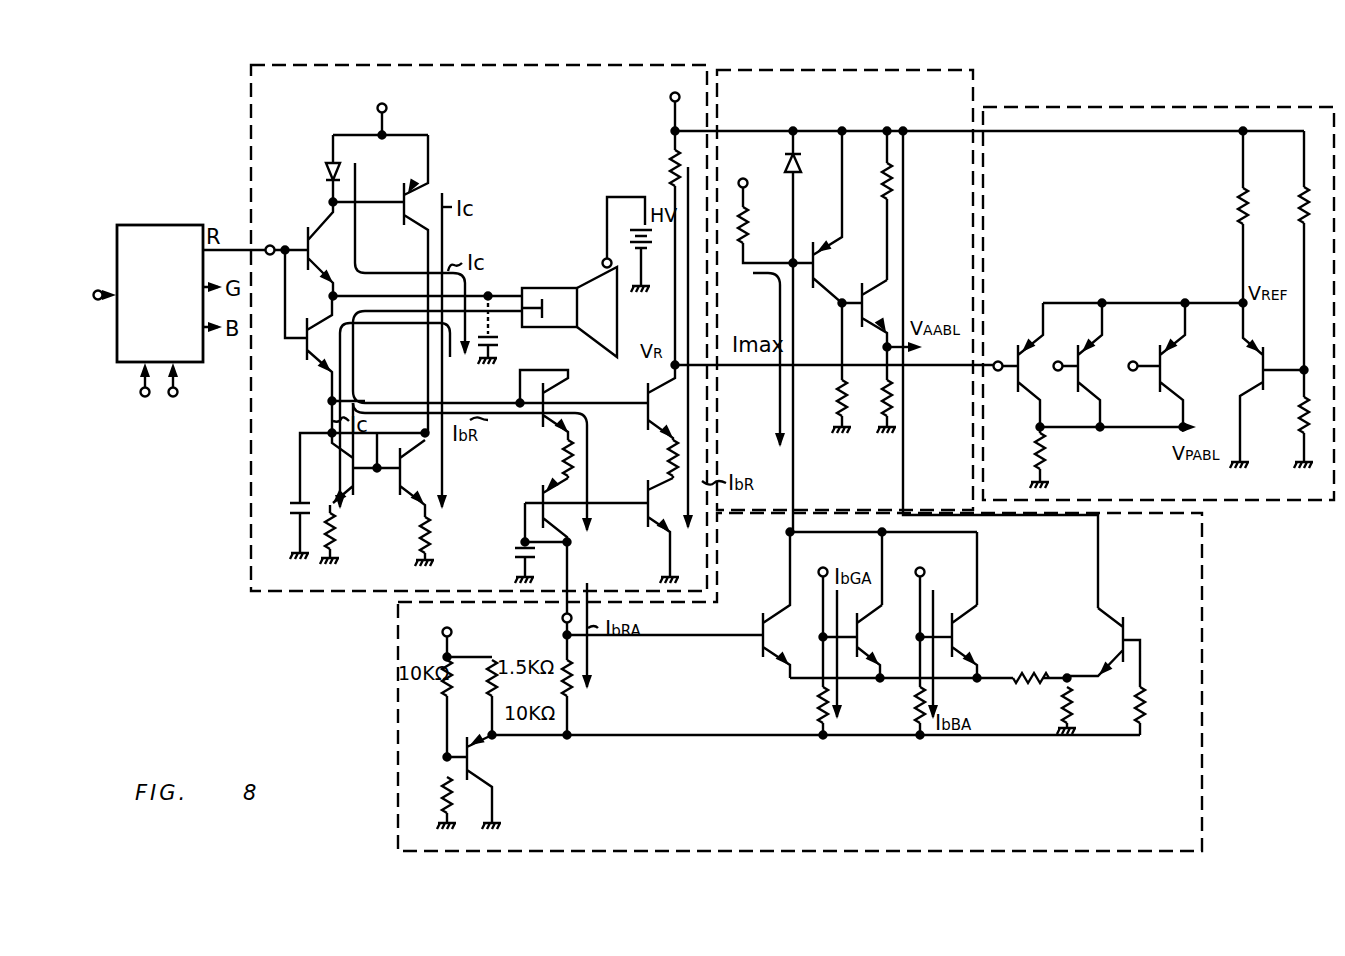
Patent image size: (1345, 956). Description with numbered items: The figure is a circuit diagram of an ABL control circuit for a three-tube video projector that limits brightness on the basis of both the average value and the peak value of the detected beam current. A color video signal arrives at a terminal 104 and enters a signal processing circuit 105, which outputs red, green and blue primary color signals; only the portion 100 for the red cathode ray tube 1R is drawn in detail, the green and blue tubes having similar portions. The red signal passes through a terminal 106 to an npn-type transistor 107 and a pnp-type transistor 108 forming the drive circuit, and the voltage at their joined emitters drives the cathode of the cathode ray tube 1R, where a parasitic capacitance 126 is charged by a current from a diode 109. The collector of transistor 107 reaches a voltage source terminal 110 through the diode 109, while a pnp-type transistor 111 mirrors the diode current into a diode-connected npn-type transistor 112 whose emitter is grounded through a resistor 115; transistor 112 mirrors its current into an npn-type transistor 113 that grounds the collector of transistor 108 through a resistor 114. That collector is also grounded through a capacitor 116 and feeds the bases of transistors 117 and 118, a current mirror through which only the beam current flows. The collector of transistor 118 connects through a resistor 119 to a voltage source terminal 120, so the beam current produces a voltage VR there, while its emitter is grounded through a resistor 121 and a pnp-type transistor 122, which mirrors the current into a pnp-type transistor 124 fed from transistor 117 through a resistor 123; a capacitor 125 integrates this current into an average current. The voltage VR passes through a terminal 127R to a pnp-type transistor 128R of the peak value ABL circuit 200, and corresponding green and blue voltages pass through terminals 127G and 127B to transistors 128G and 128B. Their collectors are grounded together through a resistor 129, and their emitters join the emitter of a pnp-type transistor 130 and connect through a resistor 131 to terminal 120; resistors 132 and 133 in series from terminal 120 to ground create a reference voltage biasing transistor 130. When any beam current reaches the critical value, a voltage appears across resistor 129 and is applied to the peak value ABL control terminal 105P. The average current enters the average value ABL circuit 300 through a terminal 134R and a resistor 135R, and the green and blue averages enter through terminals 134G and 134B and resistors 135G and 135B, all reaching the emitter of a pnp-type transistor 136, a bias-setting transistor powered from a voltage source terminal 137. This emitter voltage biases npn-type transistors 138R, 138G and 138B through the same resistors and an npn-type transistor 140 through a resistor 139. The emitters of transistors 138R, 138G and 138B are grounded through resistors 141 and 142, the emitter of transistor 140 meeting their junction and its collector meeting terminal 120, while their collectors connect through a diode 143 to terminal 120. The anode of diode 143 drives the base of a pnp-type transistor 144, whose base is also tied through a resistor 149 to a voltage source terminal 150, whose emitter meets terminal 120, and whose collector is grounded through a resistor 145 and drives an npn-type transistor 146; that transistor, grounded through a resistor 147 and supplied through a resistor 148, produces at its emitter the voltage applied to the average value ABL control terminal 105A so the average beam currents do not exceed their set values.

The portion of the cathode ray tube circuit 100 is at (320, 593).
The peak value ABL circuit 200 is at (1268, 501).
The average value ABL circuit 300 is at (1202, 806).
The terminal 104 is at (98, 300).
The signal processing circuit 105 is at (160, 222).
The peak value ABL control terminal 105P is at (145, 397).
The average value ABL control terminal 105A is at (175, 397).
The terminal 106 is at (282, 246).
The npn-type transistor 107 is at (305, 228).
The pnp-type transistor 108 is at (303, 360).
The diode 109 is at (325, 170).
The voltage source terminal 110 is at (388, 108).
The pnp-type transistor 111 is at (398, 226).
The npn-type transistor 112 is at (397, 496).
The npn-type transistor 113 is at (357, 495).
The resistor 114 is at (336, 540).
The resistor 115 is at (439, 546).
The capacitor 116 is at (293, 528).
The transistor 117 is at (540, 430).
The transistor 118 is at (645, 395).
The resistor 119 is at (669, 168).
The voltage source terminal 120 is at (670, 100).
The resistor 121 is at (668, 460).
The pnp-type transistor 122 is at (644, 528).
The resistor 123 is at (562, 482).
The pnp-type transistor 124 is at (540, 500).
The capacitor 125 is at (512, 565).
The parasitic capacitance 126 is at (494, 340).
The red color cathode ray tube 1R is at (550, 288).
The terminal 127R is at (1014, 394).
The terminal 127G is at (1060, 355).
The terminal 127B is at (1133, 355).
The pnp-type transistor 128R is at (1000, 356).
The pnp-type transistor 128G is at (1074, 394).
The pnp-type transistor 128B is at (1156, 394).
The resistor 129 is at (1025, 470).
The pnp-type transistor 130 is at (1269, 356).
The resistor 131 is at (1238, 215).
The resistor 132 is at (1291, 229).
The resistor 133 is at (1299, 428).
The terminal 134R is at (562, 620).
The terminal 134G is at (820, 568).
The terminal 134B is at (918, 568).
The resistor 135R is at (571, 700).
The resistor 135G is at (818, 712).
The resistor 135B is at (915, 712).
The pnp-type transistor 136 is at (463, 740).
The voltage source terminal 137 is at (452, 634).
The npn-type transistor 138R is at (760, 660).
The npn-type transistor 138G is at (853, 615).
The npn-type transistor 138B is at (950, 612).
The resistor 139 is at (1146, 690).
The npn-type transistor 140 is at (1128, 618).
The resistor 141 is at (1012, 696).
The resistor 142 is at (1052, 727).
The diode 143 is at (800, 165).
The pnp-type transistor 144 is at (810, 290).
The resistor 145 is at (838, 405).
The npn-type transistor 146 is at (858, 330).
The resistor 147 is at (883, 405).
The resistor 148 is at (882, 185).
The resistor 149 is at (731, 292).
The voltage source terminal 150 is at (748, 186).